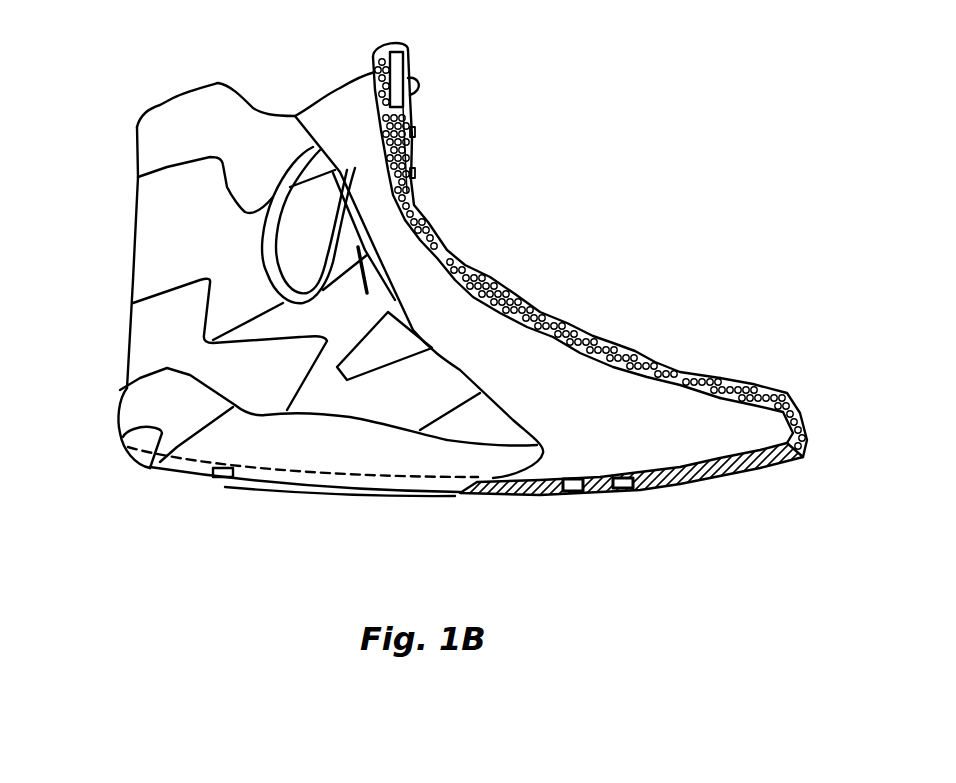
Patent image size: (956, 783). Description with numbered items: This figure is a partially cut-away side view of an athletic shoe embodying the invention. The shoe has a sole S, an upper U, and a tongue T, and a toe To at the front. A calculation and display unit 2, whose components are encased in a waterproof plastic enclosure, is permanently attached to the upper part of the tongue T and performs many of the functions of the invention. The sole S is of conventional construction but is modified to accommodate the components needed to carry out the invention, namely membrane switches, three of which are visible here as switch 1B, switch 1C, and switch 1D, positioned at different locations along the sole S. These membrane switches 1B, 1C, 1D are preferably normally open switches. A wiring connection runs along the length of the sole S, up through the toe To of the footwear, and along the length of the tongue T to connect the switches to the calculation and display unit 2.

The calculation and display unit 2 is at (372, 54).
The tongue T is at (412, 134).
The upper U is at (153, 230).
The toe To is at (781, 392).
The sole S is at (178, 470).
The membrane switch 1B is at (228, 480).
The membrane switch 1C is at (560, 492).
The membrane switch 1D is at (632, 490).